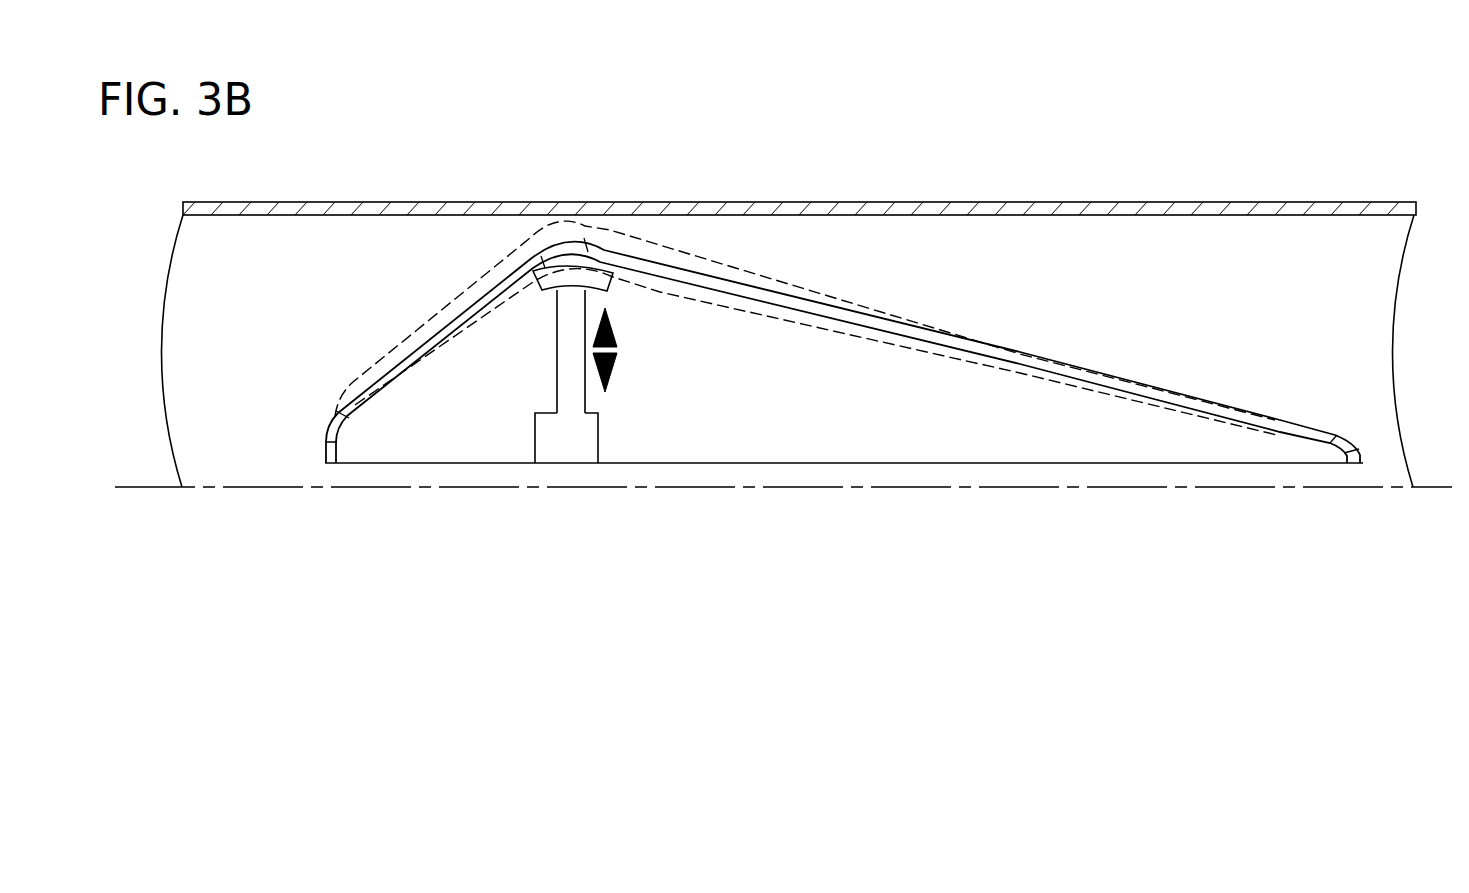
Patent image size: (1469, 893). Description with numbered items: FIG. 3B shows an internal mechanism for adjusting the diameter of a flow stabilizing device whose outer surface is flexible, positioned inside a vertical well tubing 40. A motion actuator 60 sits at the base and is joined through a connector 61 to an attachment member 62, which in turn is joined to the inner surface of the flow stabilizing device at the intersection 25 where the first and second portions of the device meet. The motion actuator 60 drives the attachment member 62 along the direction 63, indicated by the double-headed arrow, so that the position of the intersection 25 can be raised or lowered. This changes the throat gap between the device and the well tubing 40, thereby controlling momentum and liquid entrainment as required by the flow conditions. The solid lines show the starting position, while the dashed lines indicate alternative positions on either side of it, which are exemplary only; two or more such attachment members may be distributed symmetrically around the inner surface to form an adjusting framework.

The intersection 25 is at (563, 243).
The well tubing 40 is at (847, 207).
The motion actuator 60 is at (560, 440).
The connector 61 is at (587, 398).
The attachment member 62 is at (543, 288).
The direction 63 is at (608, 350).